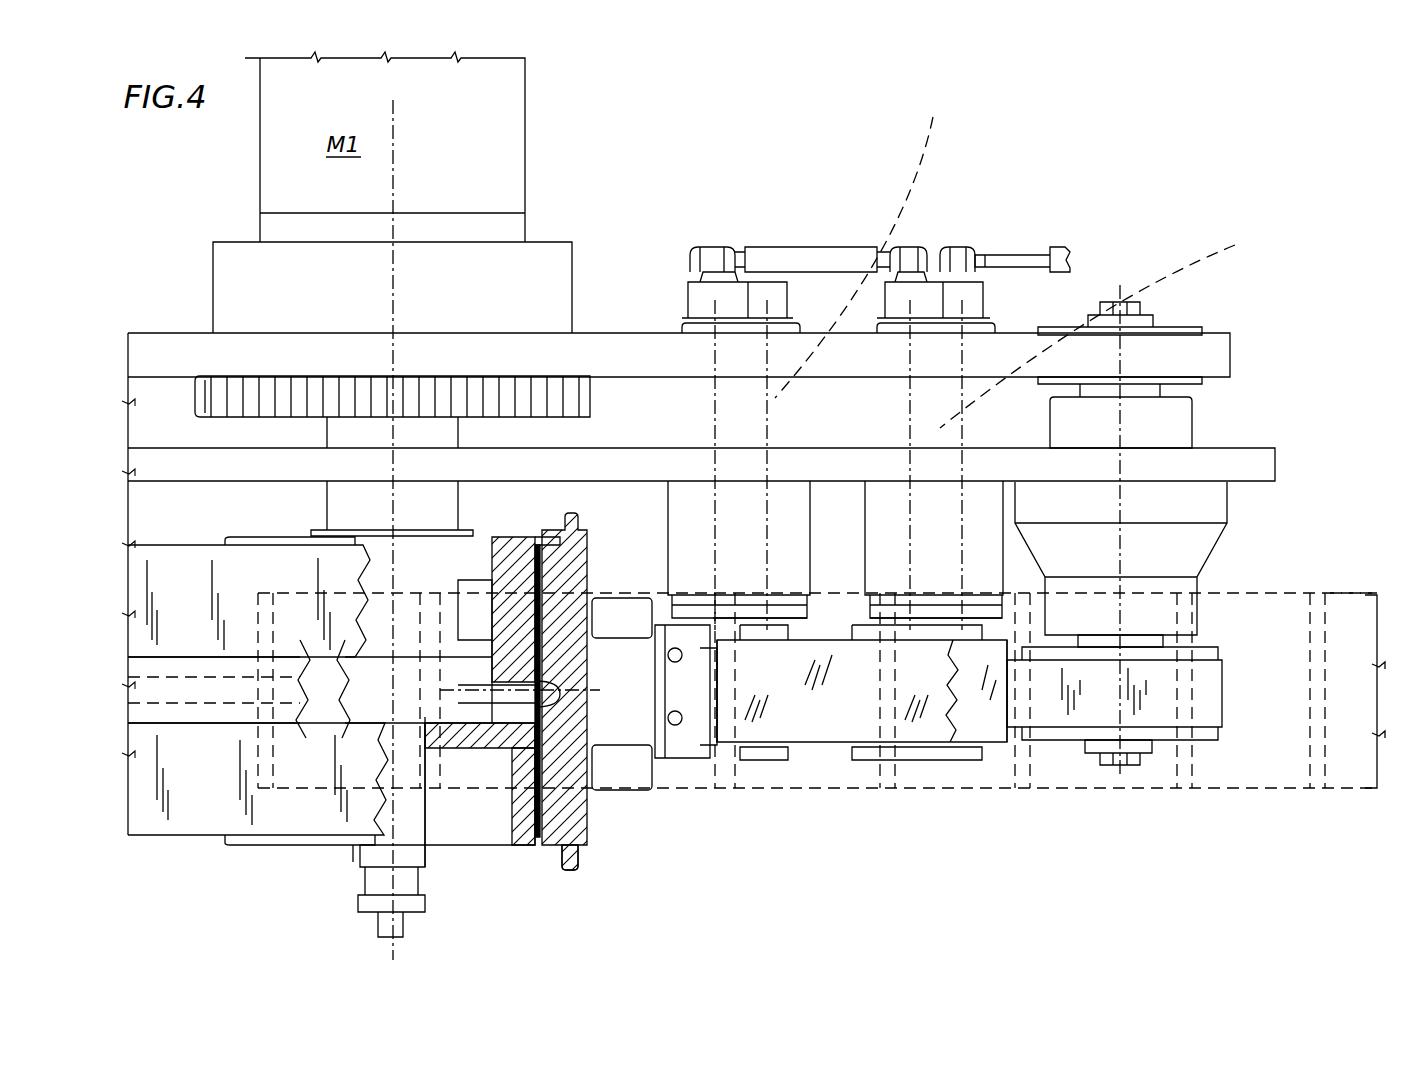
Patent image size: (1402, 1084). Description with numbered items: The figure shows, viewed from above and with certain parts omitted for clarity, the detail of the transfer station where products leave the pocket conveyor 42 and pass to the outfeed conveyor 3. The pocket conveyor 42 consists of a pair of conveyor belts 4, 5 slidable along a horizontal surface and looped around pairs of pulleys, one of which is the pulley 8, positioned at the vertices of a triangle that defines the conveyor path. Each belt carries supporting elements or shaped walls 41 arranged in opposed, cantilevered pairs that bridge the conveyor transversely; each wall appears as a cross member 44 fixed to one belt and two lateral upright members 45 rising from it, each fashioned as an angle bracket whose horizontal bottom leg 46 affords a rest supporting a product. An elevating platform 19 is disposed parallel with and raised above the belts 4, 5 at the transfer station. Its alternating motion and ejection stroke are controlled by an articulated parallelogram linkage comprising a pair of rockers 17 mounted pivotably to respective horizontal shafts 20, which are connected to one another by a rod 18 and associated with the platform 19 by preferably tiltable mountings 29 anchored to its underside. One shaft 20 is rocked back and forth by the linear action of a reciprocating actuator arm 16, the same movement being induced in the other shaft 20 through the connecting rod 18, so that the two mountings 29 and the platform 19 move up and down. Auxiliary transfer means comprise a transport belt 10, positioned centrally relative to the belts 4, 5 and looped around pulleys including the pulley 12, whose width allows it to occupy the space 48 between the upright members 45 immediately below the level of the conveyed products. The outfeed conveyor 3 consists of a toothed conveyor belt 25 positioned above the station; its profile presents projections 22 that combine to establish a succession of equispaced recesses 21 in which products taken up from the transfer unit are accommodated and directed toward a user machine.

The outfeed conveyor 3 is at (1231, 797).
The conveyor belt 4 is at (166, 568).
The conveyor belt 5 is at (155, 785).
The pulley 8 is at (503, 553).
The transport belt 10 is at (160, 672).
The pulley 12 is at (1071, 743).
The reciprocating actuator arm 16 is at (1036, 240).
The rocker 17 is at (760, 295).
The rod 18 is at (852, 240).
The elevating platform 19 is at (300, 733).
The horizontal shaft 20 is at (1246, 240).
The recess 21 is at (1351, 797).
The projection 22 is at (1228, 620).
The toothed conveyor belt 25 is at (1349, 592).
The mounting 29 is at (704, 767).
The supporting element or shaped wall 41 is at (584, 852).
The conveyor 42 is at (505, 855).
The cross member 44 is at (565, 518).
The lateral upright member 45 is at (630, 605).
The horizontal bottom leg 46 is at (603, 606).
The space 48 is at (583, 713).